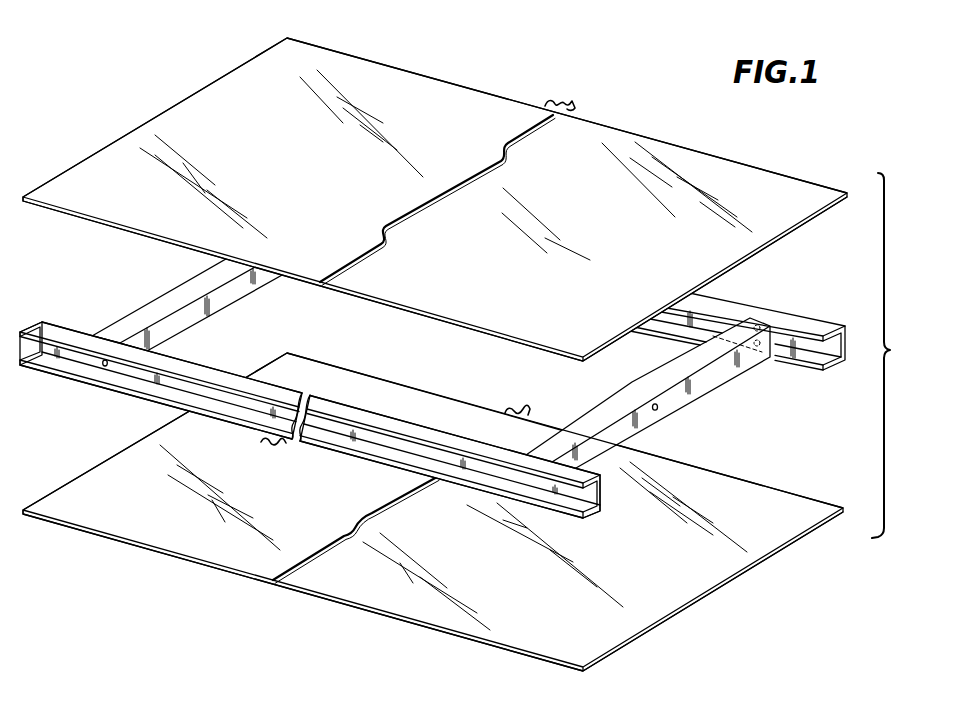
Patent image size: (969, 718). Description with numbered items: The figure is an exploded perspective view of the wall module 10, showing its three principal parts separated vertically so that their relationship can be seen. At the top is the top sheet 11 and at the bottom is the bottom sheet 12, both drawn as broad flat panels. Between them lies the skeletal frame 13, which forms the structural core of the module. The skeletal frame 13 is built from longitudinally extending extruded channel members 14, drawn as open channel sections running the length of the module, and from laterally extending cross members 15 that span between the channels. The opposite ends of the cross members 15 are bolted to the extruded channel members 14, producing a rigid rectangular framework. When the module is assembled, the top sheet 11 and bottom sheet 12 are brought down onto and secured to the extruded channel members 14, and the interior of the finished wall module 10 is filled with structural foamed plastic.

The wall module 10 is at (455, 354).
The top sheet 11 is at (310, 210).
The bottom sheet 12 is at (531, 610).
The skeletal frame 13 is at (144, 396).
The extruded channel members 14 is at (485, 484).
The cross members 15 is at (247, 290).